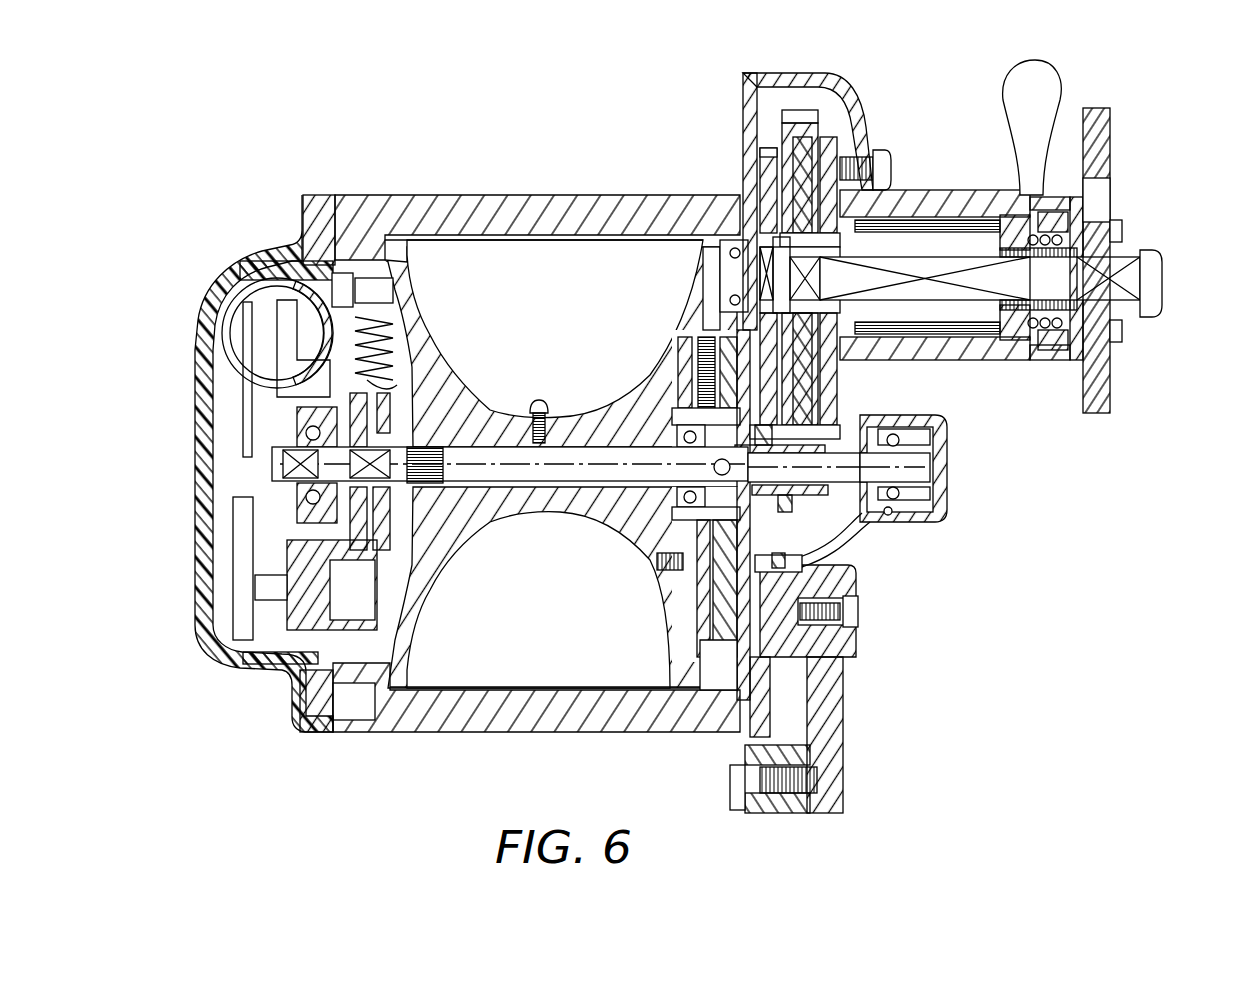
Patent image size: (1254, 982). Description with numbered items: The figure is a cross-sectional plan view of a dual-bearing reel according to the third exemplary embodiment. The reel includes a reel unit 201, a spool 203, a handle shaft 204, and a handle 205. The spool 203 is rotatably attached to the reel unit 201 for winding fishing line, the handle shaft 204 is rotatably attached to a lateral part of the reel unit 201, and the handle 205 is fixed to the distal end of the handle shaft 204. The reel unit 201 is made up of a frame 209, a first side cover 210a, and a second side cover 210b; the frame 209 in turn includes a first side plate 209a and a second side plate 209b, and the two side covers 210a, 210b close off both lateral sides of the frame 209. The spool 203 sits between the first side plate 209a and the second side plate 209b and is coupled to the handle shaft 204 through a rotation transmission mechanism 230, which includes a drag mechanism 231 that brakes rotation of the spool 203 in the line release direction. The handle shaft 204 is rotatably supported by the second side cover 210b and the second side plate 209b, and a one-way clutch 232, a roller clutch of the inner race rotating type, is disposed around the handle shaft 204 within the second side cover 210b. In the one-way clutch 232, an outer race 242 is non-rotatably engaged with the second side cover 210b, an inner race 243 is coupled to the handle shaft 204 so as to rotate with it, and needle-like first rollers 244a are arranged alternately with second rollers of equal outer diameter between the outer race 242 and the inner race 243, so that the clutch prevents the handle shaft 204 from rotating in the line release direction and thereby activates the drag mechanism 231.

The reel unit 201 is at (497, 170).
The spool 203 is at (582, 410).
The handle shaft 204 is at (1040, 280).
The handle 205 is at (1107, 367).
The frame 209 is at (385, 194).
The first side plate 209a is at (340, 345).
The second side plate 209b is at (740, 662).
The first side cover 210a is at (196, 356).
The second side cover 210b is at (892, 98).
The rotation transmission mechanism 230 is at (823, 452).
The drag mechanism 231 is at (917, 497).
The one-way clutch 232 is at (947, 210).
The outer race 242 is at (908, 195).
The inner race 243 is at (922, 325).
The first rollers 244a is at (978, 464).